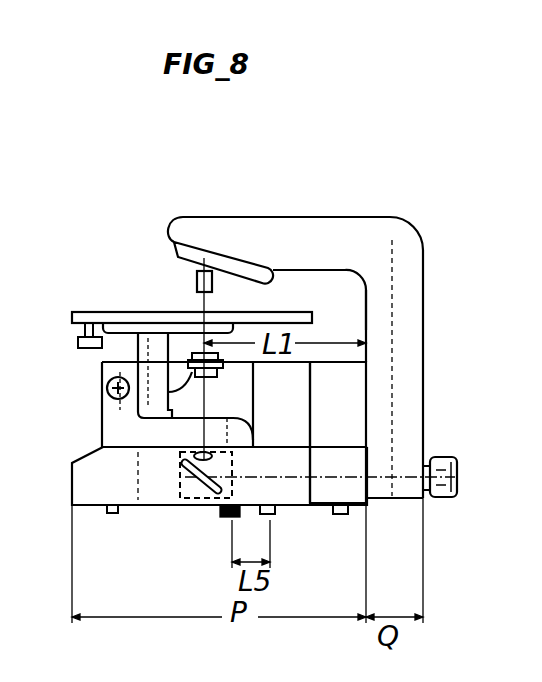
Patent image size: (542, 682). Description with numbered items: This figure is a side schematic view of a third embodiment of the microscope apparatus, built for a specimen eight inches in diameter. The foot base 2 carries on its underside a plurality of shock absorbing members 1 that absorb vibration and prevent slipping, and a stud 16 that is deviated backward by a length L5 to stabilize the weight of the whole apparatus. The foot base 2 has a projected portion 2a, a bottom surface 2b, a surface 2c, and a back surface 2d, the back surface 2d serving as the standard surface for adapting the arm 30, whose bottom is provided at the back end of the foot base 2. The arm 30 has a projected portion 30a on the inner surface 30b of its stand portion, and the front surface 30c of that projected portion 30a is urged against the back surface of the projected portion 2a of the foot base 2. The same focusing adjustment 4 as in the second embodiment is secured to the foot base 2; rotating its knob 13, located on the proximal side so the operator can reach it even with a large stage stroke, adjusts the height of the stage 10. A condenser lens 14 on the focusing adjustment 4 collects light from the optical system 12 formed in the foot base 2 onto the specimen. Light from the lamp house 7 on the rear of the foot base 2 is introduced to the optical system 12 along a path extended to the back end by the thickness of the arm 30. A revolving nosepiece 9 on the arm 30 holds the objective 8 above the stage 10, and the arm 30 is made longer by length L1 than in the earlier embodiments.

The shock absorbing members 1 is at (110, 511).
The foot base 2 is at (313, 495).
The projected portion 2a is at (278, 365).
The bottom surface 2b is at (253, 388).
The column front face 2c is at (310, 403).
The back surface 2d is at (368, 465).
The focusing adjustment 4 is at (110, 421).
The lamp house 7 is at (449, 497).
The objective 8 is at (197, 283).
The revolving nosepiece 9 is at (172, 252).
The stage 10 is at (73, 311).
The optical system 12 is at (180, 478).
The knob 13 is at (107, 382).
The condenser lens 14 is at (192, 353).
The stud 16 is at (222, 512).
The arm 30 is at (350, 216).
The projected portion 30a is at (333, 377).
The inner surface 30b is at (367, 298).
The front surface 30c is at (320, 470).